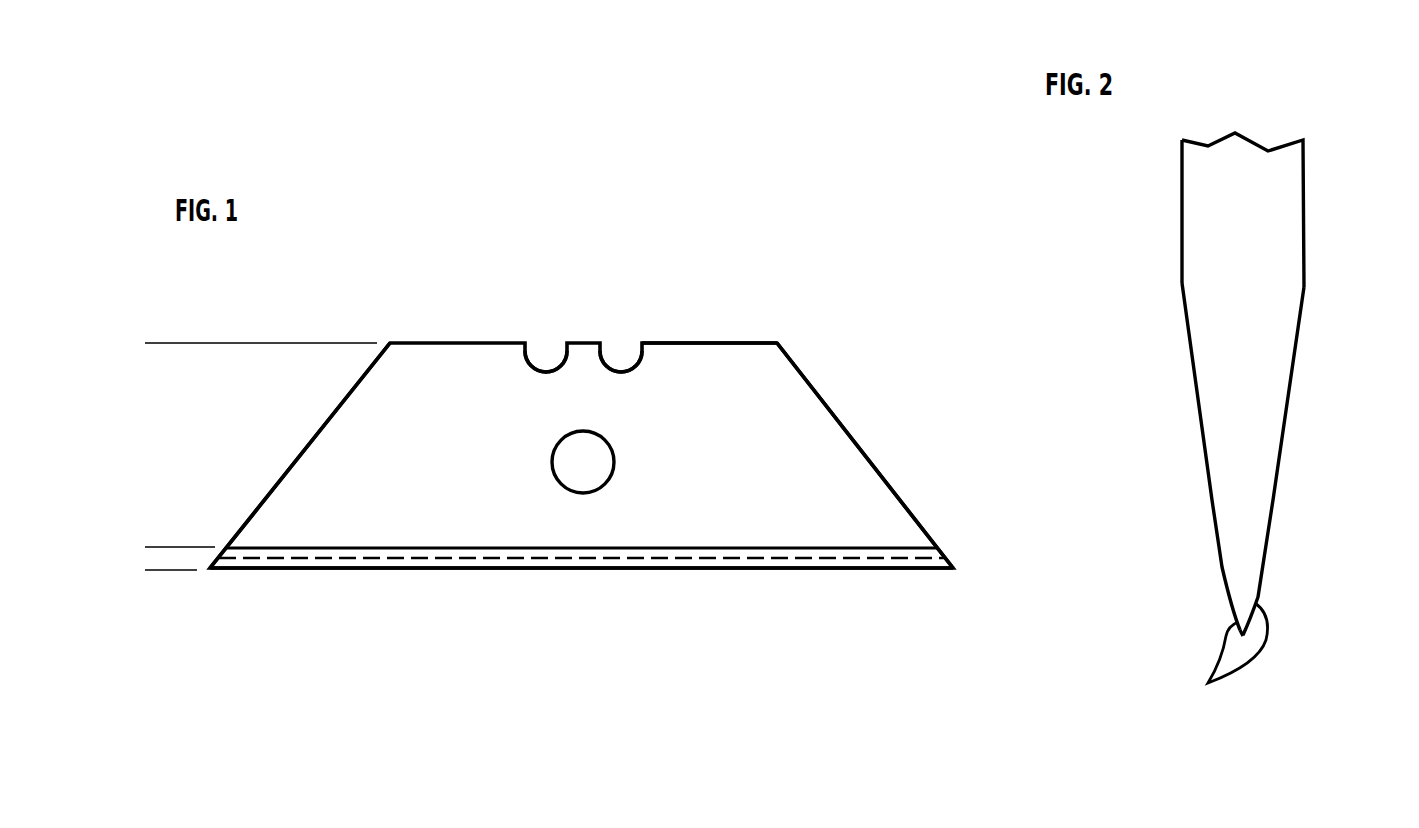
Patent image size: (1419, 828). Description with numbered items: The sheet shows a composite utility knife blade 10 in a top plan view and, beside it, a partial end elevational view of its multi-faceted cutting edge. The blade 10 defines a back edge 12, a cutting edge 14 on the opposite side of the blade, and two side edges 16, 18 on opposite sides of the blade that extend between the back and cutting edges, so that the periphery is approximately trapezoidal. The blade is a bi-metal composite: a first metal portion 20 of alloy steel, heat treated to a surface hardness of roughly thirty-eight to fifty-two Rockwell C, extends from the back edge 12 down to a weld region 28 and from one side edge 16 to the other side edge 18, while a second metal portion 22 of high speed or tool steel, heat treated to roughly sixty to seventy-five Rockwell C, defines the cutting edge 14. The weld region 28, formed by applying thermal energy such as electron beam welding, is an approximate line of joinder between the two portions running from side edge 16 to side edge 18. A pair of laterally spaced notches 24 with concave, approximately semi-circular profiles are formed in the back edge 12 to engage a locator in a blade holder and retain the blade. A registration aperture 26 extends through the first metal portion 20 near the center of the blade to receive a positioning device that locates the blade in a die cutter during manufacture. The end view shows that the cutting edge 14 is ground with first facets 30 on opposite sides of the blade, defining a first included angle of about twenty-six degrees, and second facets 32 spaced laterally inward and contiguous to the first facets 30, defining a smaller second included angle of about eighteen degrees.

In FIG. 1, the composite utility knife blade 10 is at (672, 294).
In FIG. 2, the composite utility knife blade 10 is at (1339, 112).
In FIG. 1, the back edge 12 is at (697, 342).
In FIG. 1, the cutting edge 14 is at (602, 571).
In FIG. 2, the cutting edge 14 is at (1259, 672).
In FIG. 1, the side edge 16 is at (307, 446).
In FIG. 1, the side edge 18 is at (877, 471).
In FIG. 1, the first metal portion 20 is at (153, 347).
In FIG. 1, the second metal portion 22 is at (153, 574).
In FIG. 1, the notches 24 is at (620, 373).
In FIG. 1, the registration aperture 26 is at (611, 442).
In FIG. 1, the weld region 28 is at (657, 546).
In FIG. 2, the first facets 30 is at (1220, 654).
In FIG. 2, the second facets 32 is at (1202, 440).